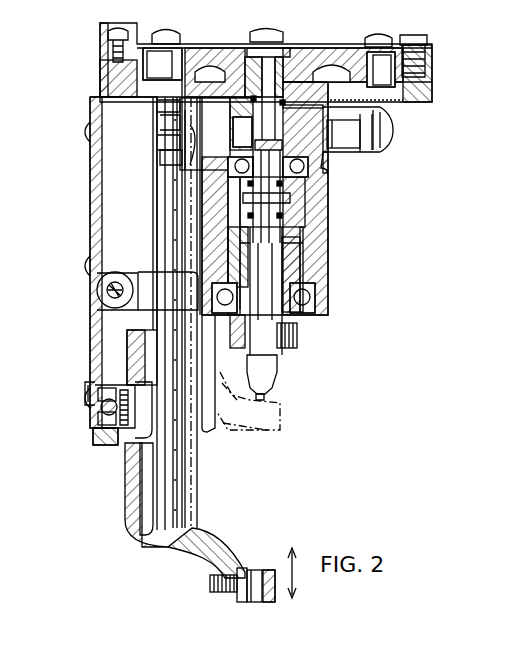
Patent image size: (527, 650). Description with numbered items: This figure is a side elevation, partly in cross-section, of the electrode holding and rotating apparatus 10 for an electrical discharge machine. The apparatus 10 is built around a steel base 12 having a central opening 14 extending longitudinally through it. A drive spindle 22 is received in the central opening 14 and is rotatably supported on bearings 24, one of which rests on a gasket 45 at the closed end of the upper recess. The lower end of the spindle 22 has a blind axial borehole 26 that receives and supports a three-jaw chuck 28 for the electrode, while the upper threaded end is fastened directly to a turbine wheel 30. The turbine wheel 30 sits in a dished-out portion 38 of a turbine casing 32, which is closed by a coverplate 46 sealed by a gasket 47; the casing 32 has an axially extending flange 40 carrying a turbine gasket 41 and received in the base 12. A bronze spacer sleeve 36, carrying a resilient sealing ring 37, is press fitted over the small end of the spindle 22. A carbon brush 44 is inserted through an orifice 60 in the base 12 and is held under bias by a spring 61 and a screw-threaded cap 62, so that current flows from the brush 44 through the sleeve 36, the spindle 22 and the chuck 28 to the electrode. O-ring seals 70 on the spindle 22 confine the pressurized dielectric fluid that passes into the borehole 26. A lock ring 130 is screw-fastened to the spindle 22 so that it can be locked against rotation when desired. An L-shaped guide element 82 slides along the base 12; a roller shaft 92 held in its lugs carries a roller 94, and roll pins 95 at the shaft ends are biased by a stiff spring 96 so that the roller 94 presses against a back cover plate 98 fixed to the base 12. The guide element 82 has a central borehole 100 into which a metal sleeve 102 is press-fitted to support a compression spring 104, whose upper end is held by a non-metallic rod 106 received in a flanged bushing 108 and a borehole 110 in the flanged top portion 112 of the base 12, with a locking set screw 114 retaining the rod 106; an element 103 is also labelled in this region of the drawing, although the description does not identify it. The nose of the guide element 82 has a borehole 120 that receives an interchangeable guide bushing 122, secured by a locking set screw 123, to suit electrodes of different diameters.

The apparatus 10 is at (444, 69).
The base 12 is at (323, 229).
The central opening 14 is at (283, 200).
The drive spindle 22 is at (292, 344).
The bearings 24 is at (310, 170).
The blind axial borehole 26 is at (272, 254).
The three-jaw chuck 28 is at (272, 367).
The turbine wheel 30 is at (315, 85).
The turbine casing 32 is at (432, 68).
The spacer sleeve 36 is at (242, 82).
The resilient sealing ring 37 is at (305, 75).
The dished-out portion 38 is at (138, 70).
The axially extending flange 40 is at (232, 112).
The turbine gasket 41 is at (202, 97).
The carbon brush 44 is at (333, 115).
The gasket 45 is at (283, 193).
The coverplate 46 is at (262, 44).
The gasket 47 is at (390, 48).
The orifice 60 is at (377, 153).
The spring 61 is at (383, 133).
The cap 62 is at (392, 122).
The O-ring seals 70 is at (247, 214).
The guide element 82 is at (200, 563).
The roller shaft 92 is at (115, 274).
The roller 94 is at (110, 311).
The roll pins 95 is at (85, 386).
The spring 96 is at (128, 398).
The back cover plate 98 is at (100, 285).
The central borehole 100 is at (152, 533).
The metal sleeve 102 is at (152, 477).
The collar 103 is at (165, 141).
The compression spring 104 is at (152, 513).
The rod 106 is at (157, 221).
The flanged bushing 108 is at (185, 188).
The borehole 110 is at (175, 160).
The flanged top portion 112 is at (160, 103).
The locking set screw 114 is at (160, 118).
The borehole 120 is at (262, 572).
The guide bushing 122 is at (245, 570).
The locking set screw 123 is at (210, 584).
The lock ring 130 is at (293, 271).